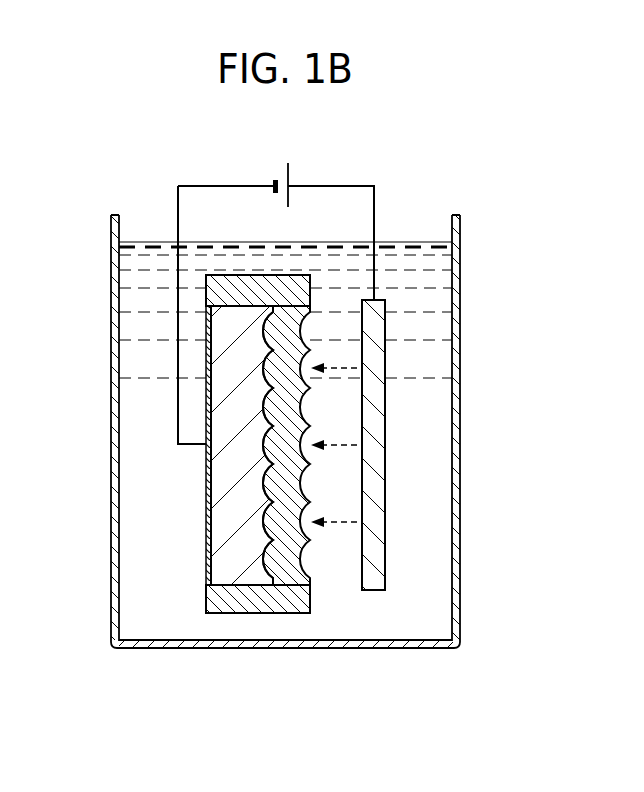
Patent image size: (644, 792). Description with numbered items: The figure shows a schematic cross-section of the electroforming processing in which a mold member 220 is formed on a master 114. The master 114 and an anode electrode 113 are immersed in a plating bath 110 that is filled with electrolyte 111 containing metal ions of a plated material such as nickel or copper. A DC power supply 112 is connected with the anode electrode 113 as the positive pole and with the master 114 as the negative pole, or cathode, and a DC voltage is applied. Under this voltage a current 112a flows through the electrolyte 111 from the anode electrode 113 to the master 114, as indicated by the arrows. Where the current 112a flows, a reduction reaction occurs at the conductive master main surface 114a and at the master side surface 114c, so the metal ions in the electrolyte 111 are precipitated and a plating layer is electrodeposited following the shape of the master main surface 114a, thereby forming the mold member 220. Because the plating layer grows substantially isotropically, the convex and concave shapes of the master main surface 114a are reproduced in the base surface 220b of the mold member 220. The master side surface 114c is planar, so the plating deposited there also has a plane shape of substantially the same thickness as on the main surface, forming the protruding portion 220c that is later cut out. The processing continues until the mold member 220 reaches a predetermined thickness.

The plating bath 110 is at (137, 650).
The electrolyte 111 is at (432, 627).
The DC power supply 112 is at (289, 170).
The current 112a is at (337, 365).
The anode electrode 113 is at (373, 583).
The master 114 is at (150, 445).
The master main surface 114a is at (265, 473).
The master side surface 114c is at (192, 476).
The mold member 220 is at (282, 514).
The base surface 220b is at (302, 562).
The protruding portion 220c is at (258, 669).